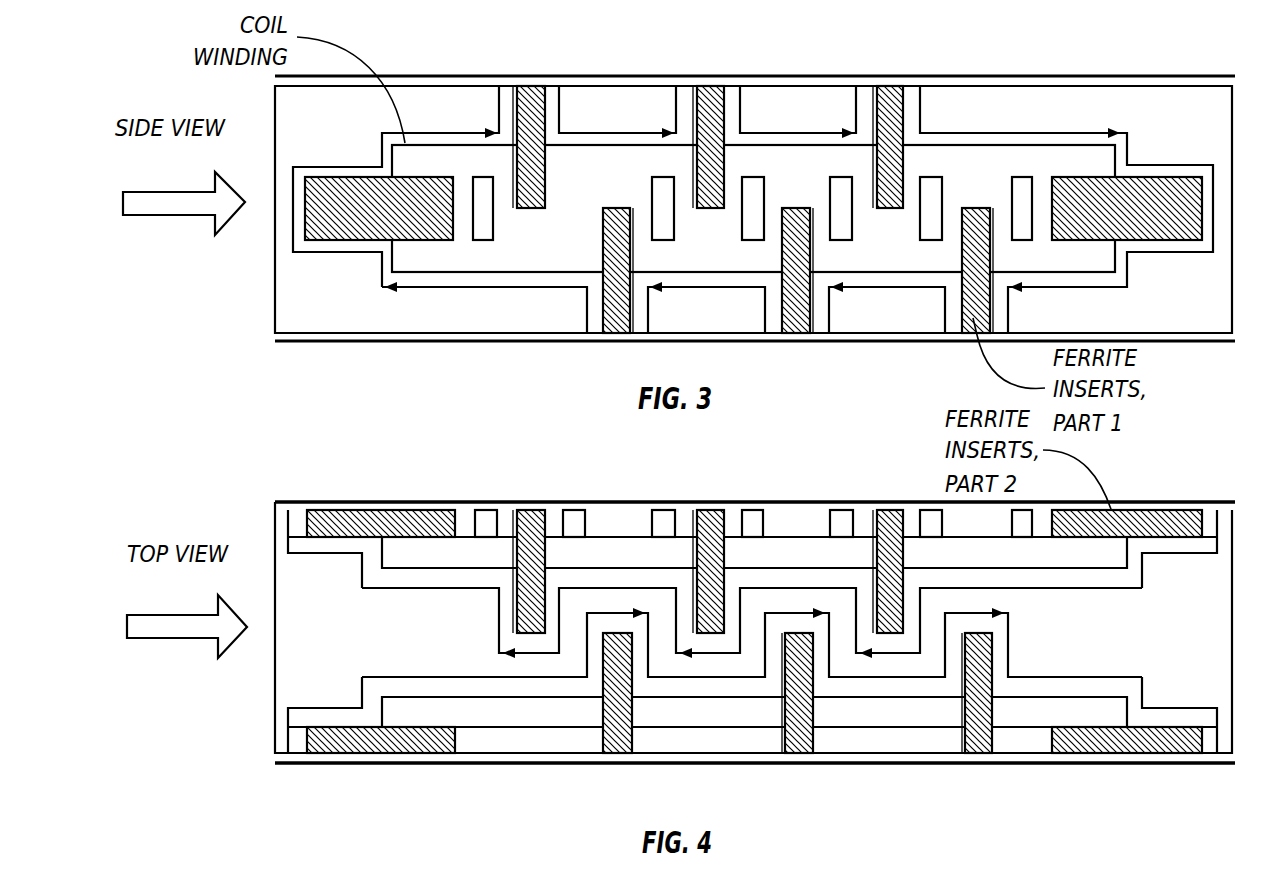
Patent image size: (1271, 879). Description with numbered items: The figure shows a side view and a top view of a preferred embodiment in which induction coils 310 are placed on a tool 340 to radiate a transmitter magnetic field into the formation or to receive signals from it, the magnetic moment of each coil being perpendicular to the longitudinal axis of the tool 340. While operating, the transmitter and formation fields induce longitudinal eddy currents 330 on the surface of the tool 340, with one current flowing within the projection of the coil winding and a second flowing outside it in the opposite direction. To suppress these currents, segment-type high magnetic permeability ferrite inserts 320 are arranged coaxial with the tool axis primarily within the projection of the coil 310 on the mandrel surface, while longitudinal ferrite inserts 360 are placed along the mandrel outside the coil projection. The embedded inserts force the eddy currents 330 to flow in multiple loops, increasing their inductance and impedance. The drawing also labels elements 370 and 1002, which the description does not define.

In FIG. 3, the induction coil 310 is at (933, 145).
In FIG. 4, the induction coil 310 is at (765, 568).
In FIG. 3, the ferrite insert 320 is at (526, 86).
In FIG. 3, the eddy current 330 is at (610, 134).
In FIG. 4, the eddy current 330 is at (583, 590).
In FIG. 3, the tool 340 is at (513, 333).
In FIG. 4, the tool 340 is at (590, 510).
In FIG. 4, the longitudinal ferrite insert 360 is at (1140, 522).
In FIG. 3, the top shield plate 370 is at (770, 77).
In FIG. 4, the top shield plate 370 is at (875, 502).
In FIG. 3, the spacer insert 1002 is at (483, 230).
In FIG. 4, the spacer insert 1002 is at (485, 515).